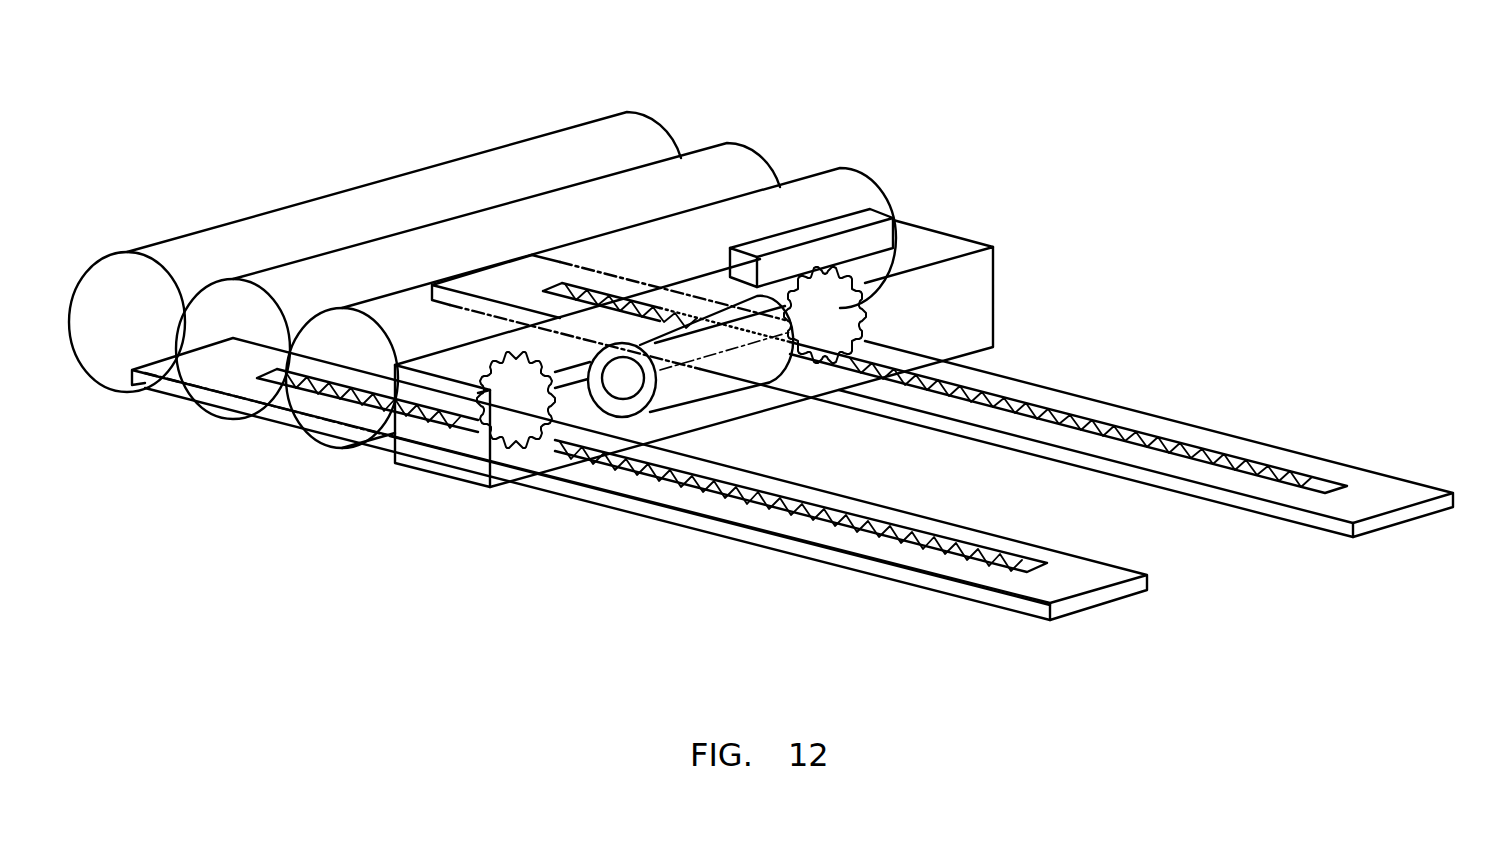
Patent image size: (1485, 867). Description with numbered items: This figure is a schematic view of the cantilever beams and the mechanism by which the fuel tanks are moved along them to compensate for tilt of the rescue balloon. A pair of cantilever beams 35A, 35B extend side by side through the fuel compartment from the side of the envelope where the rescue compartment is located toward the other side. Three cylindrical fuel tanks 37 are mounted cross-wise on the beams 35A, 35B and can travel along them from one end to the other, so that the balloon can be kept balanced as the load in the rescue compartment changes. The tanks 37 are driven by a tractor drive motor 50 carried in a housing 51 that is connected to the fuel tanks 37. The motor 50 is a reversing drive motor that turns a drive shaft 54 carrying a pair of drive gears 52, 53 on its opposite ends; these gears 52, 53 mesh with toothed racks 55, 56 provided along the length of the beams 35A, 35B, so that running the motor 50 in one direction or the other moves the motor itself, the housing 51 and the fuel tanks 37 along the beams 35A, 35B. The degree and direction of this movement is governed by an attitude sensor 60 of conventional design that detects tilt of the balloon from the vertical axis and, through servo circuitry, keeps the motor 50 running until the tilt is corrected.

The cylindrical fuel tanks 37 is at (768, 212).
The housing 51 is at (460, 475).
The attitude sensor 60 is at (847, 220).
The tractor drive motor 50 is at (613, 420).
The drive shaft 54 is at (543, 445).
The drive gear 52 is at (462, 448).
The drive gear 53 is at (878, 253).
The cantilever beam 35A is at (1030, 587).
The toothed rack 55 is at (683, 468).
The cantilever beam 35B is at (1362, 480).
The toothed rack 56 is at (990, 395).